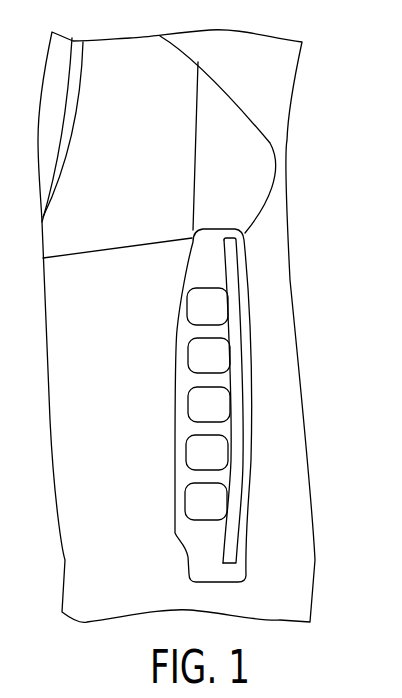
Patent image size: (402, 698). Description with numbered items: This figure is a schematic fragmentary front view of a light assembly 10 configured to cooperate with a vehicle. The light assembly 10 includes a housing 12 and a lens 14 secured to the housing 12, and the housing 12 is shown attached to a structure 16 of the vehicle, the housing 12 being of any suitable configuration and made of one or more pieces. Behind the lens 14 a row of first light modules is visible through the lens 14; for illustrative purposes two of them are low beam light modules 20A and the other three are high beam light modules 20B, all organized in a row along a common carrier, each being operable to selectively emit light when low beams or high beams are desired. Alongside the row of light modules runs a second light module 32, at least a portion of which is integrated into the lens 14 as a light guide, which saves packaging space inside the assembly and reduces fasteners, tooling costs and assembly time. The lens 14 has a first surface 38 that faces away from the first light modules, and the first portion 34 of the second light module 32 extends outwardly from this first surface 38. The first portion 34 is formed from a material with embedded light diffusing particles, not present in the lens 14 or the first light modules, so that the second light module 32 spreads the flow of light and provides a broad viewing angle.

The light assembly 10 is at (338, 309).
The housing 12 is at (225, 228).
The lens 14 is at (120, 172).
The first surface 38 is at (120, 160).
The structure 16 is at (248, 152).
The low beam light modules 20A is at (218, 357).
The high beam light modules 20B is at (218, 452).
The second light module 32 is at (237, 435).
The first portion 34 is at (247, 387).